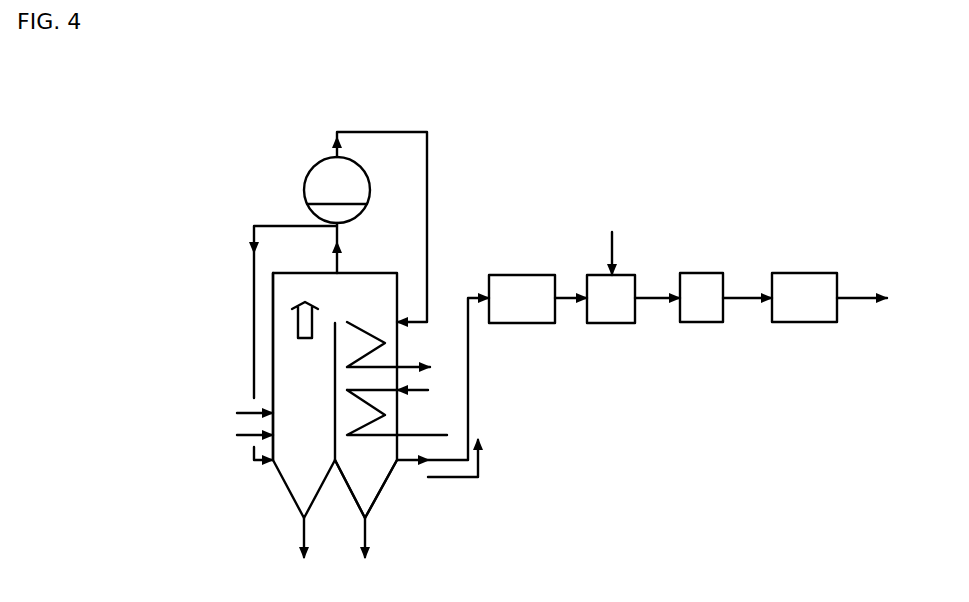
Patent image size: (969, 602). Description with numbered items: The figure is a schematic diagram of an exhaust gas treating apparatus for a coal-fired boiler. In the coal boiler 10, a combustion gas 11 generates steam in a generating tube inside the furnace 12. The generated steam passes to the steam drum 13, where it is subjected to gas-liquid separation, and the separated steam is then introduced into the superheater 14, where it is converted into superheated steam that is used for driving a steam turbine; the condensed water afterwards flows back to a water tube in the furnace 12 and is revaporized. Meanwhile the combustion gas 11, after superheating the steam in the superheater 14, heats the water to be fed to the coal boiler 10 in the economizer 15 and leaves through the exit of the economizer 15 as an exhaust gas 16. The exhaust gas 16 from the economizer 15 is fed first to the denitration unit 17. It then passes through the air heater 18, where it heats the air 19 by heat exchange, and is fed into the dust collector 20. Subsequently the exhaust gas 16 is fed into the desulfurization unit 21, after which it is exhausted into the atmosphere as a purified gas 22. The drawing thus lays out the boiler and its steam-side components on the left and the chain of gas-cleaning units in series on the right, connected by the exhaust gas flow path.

The coal boiler 10 is at (265, 502).
The combustion gas 11 is at (298, 323).
The furnace 12 is at (273, 365).
The steam drum 13 is at (318, 160).
The superheater 14 is at (365, 305).
The economizer 15 is at (362, 452).
The exhaust gas 16 is at (460, 480).
The denitration unit 17 is at (505, 275).
The air heater 18 is at (603, 323).
The air 19 is at (612, 247).
The dust collector 20 is at (697, 323).
The desulfurization unit 21 is at (797, 322).
The purified gas 22 is at (853, 295).